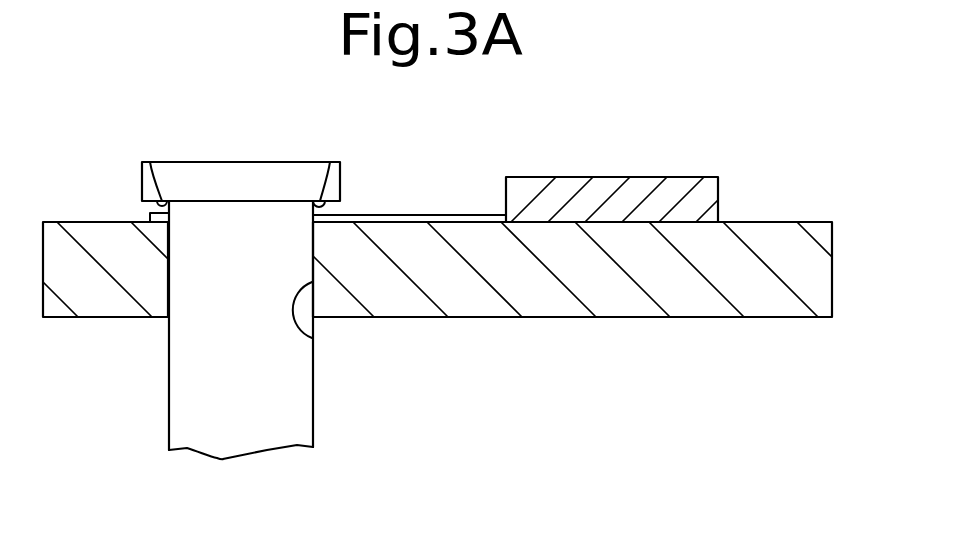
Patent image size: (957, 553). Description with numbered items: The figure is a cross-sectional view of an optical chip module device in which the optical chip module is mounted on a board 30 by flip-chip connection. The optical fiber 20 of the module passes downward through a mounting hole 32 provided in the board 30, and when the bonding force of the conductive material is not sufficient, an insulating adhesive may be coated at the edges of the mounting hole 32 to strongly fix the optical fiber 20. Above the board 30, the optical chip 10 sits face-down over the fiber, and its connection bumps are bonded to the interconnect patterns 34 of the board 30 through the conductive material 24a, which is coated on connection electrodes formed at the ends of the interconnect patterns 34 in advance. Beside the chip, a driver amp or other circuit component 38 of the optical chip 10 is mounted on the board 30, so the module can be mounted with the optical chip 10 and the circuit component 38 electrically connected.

The optical chip 10 is at (255, 178).
The conductive material 24a is at (151, 162).
The interconnect patterns 34 is at (450, 215).
The circuit component 38 is at (620, 197).
The board 30 is at (629, 308).
The optical fiber 20 is at (186, 395).
The mounting hole 32 is at (312, 338).